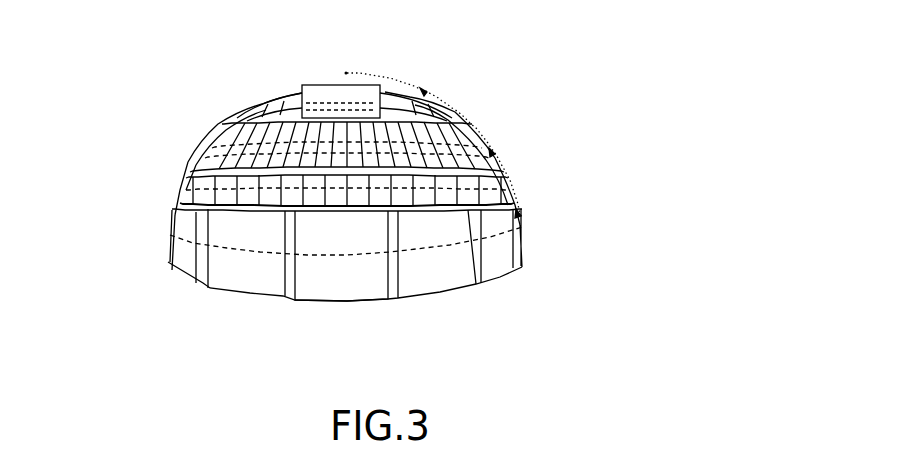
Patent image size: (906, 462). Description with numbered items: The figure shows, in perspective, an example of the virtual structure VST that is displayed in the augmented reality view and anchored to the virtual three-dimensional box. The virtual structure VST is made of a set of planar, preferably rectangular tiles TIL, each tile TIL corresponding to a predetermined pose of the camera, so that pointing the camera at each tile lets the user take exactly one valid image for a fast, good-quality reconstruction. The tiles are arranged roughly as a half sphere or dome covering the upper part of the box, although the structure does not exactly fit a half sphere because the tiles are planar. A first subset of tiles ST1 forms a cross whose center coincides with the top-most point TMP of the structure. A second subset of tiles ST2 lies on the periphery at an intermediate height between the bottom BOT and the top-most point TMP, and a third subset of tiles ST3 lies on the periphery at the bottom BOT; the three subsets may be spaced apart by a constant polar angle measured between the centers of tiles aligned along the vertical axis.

The top-most point TMP is at (385, 89).
The first subset of tiles ST1 is at (297, 92).
The second subset of tiles ST2 is at (190, 162).
The third subset of tiles ST3 is at (178, 215).
The bottom BOT is at (168, 275).
The planar tile TIL is at (343, 295).
The virtual structure VST is at (560, 229).